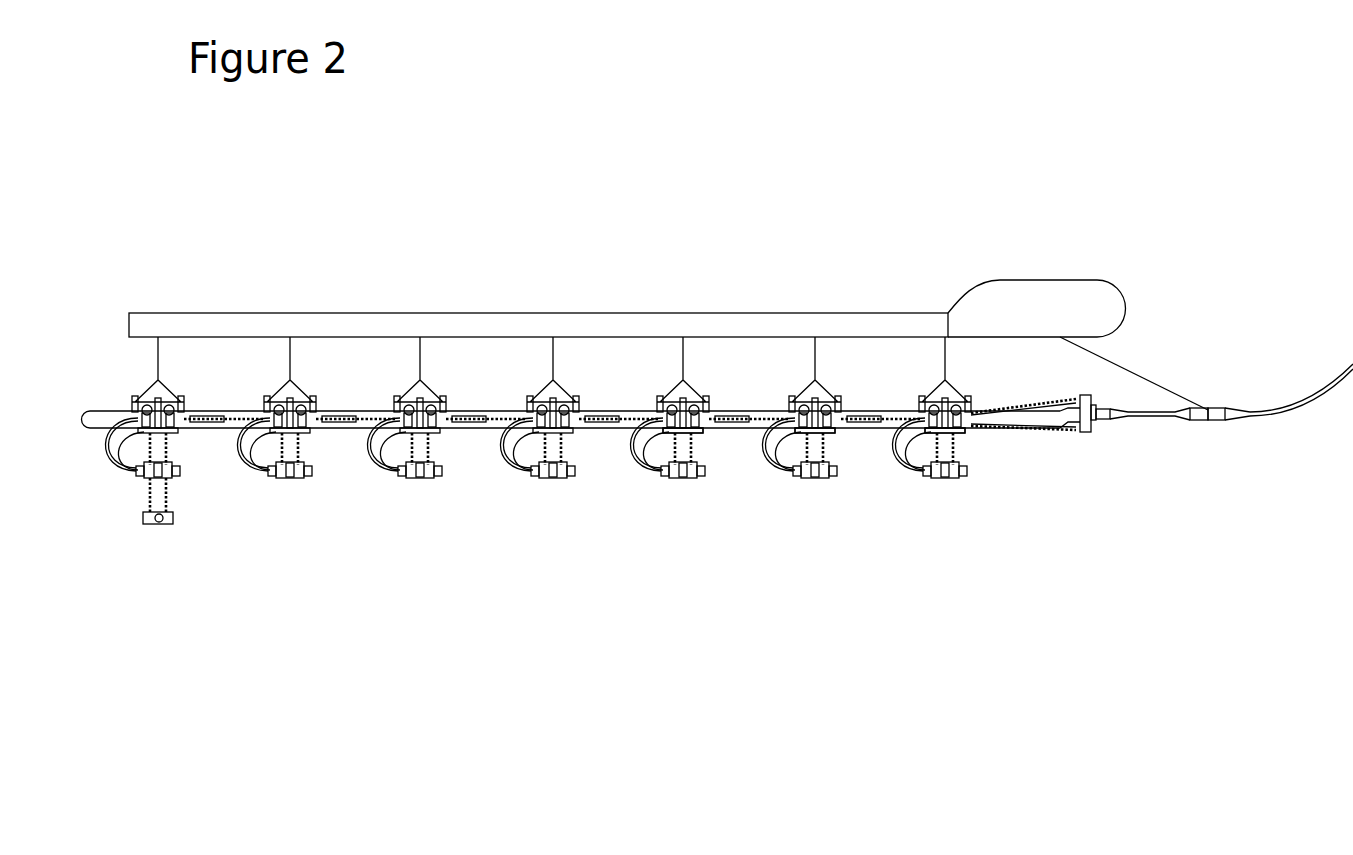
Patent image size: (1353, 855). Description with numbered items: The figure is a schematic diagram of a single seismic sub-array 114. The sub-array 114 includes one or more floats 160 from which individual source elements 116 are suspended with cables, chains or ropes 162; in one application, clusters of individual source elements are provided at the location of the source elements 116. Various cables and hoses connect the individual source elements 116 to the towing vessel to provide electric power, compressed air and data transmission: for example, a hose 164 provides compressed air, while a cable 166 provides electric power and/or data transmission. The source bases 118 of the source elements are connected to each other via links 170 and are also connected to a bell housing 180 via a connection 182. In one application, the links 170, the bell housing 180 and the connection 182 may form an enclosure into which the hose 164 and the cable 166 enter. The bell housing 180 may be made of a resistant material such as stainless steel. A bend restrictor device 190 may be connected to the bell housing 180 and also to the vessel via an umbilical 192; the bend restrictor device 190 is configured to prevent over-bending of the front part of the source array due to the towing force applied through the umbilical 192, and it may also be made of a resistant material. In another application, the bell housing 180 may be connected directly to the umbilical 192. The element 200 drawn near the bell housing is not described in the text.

The sub-array 114 is at (630, 231).
The individual source elements 116 is at (420, 478).
The source bases 118 is at (692, 432).
The floats 160 is at (1033, 300).
The cables, chains or ropes 162 is at (420, 385).
The hose 164 is at (495, 453).
The cable 166 is at (520, 462).
The links 170 is at (898, 405).
The bell housing 180 is at (1105, 415).
The connection 182 is at (1022, 425).
The bend restrictor device 190 is at (1212, 418).
The umbilical 192 is at (1310, 413).
The upper chain bridle 200 is at (1087, 395).